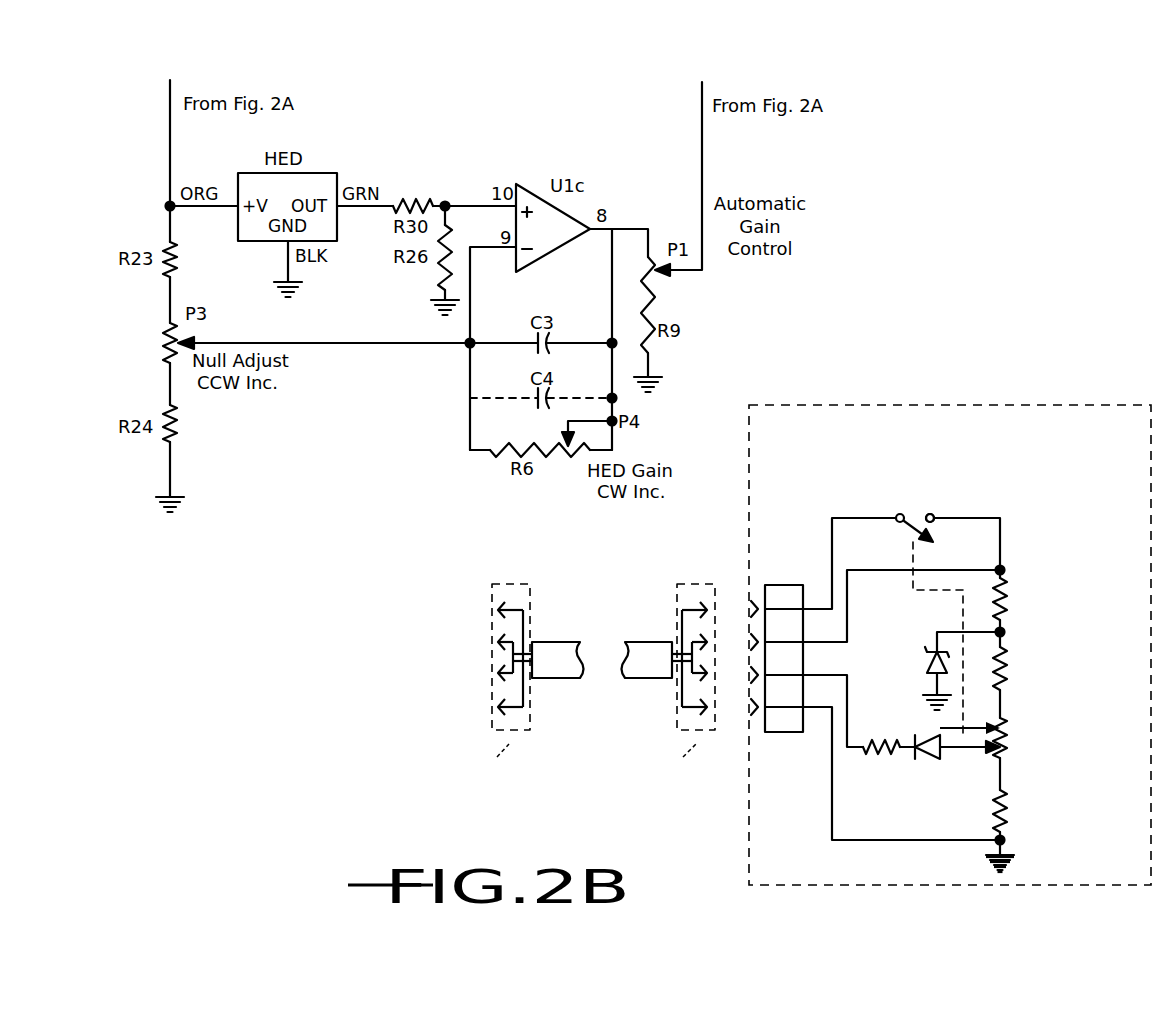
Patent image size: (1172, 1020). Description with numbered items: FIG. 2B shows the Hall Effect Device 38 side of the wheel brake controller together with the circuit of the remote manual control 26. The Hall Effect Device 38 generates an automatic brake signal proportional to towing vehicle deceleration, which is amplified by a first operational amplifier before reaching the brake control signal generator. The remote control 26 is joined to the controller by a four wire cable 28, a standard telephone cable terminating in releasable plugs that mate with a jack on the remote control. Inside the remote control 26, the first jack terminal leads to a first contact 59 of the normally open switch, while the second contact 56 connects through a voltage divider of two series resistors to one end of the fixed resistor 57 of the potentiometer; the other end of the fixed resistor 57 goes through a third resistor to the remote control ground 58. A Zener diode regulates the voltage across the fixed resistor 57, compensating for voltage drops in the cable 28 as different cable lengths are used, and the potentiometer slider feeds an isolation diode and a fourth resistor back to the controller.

The Hall Effect Device 38 is at (328, 158).
The four wire cable 28 is at (600, 622).
The remote manual control 26 is at (1054, 401).
The switch S2 pole 59 is at (865, 508).
The second normally open contact 56 is at (940, 536).
The fixed resistor 57 is at (972, 728).
The ground connection 58 is at (1018, 847).